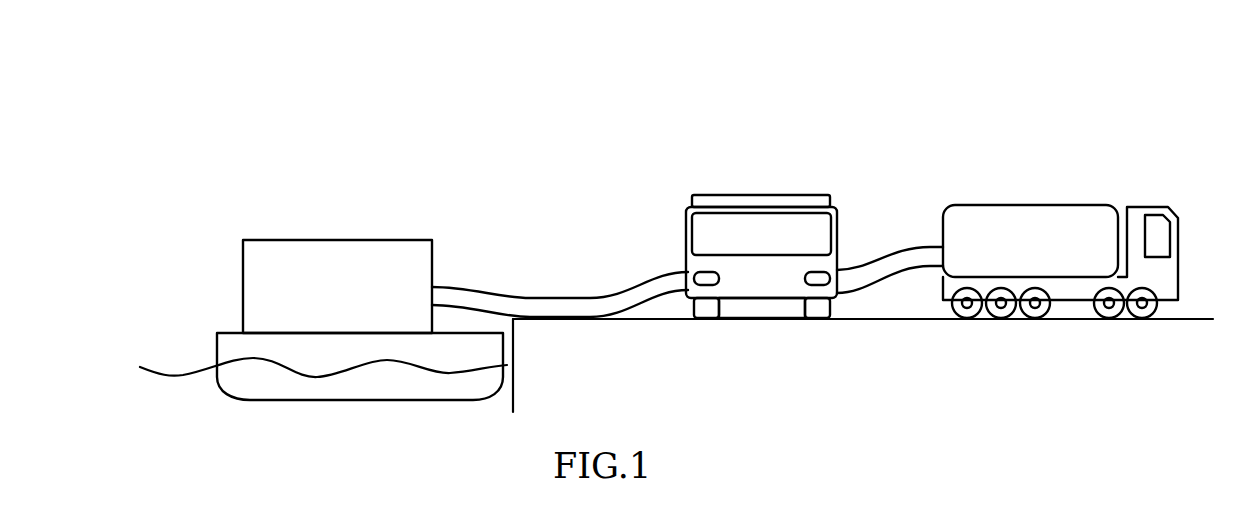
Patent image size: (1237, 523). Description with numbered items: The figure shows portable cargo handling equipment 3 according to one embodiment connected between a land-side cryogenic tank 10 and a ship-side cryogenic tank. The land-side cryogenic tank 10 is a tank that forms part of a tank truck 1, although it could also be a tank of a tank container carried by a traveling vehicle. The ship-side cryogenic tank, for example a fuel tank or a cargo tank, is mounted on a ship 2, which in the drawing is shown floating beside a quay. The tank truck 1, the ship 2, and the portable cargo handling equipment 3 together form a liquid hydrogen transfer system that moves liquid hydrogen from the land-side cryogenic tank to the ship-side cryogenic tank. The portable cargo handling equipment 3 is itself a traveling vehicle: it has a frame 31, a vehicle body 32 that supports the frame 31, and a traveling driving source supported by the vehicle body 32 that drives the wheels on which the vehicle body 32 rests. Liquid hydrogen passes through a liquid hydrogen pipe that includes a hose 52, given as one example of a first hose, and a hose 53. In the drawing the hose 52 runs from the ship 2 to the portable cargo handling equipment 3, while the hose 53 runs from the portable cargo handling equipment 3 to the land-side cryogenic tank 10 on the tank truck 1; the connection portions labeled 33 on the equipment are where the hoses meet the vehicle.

The tank truck 1 is at (1077, 222).
The ship 2 is at (252, 203).
The portable cargo handling equipment 3 is at (750, 177).
The land-side cryogenic tank 10 is at (1029, 205).
The frame 31 is at (715, 195).
The vehicle body 32 is at (837, 212).
The hose connection portion 33 is at (690, 310).
The hose 52 is at (530, 297).
The hose 53 is at (905, 247).